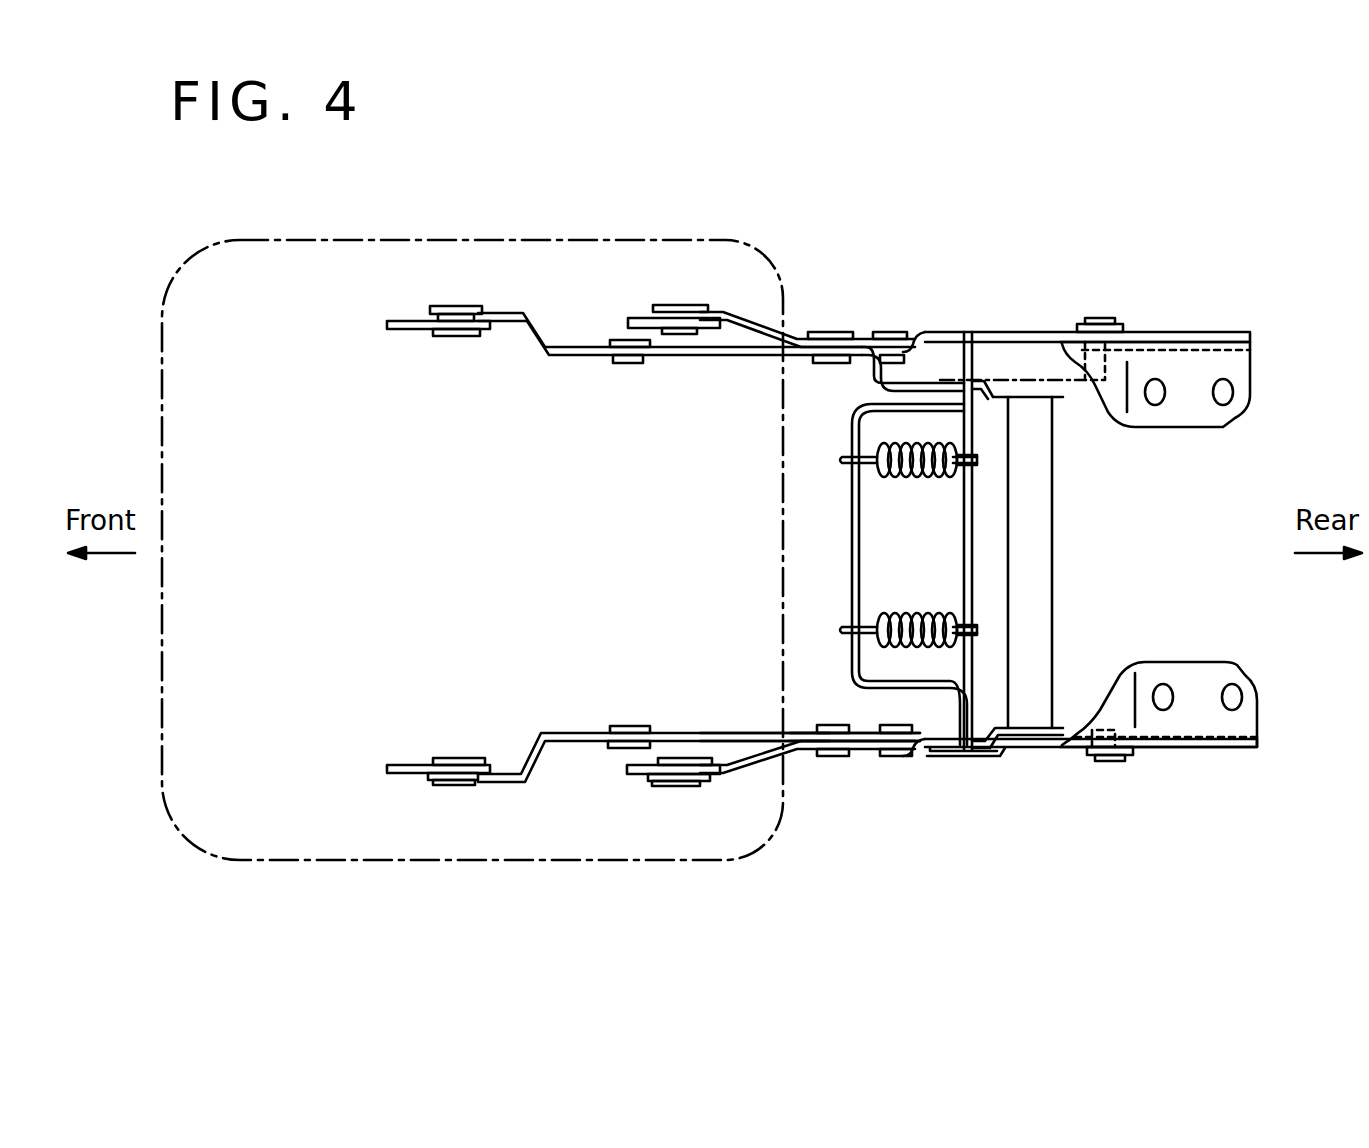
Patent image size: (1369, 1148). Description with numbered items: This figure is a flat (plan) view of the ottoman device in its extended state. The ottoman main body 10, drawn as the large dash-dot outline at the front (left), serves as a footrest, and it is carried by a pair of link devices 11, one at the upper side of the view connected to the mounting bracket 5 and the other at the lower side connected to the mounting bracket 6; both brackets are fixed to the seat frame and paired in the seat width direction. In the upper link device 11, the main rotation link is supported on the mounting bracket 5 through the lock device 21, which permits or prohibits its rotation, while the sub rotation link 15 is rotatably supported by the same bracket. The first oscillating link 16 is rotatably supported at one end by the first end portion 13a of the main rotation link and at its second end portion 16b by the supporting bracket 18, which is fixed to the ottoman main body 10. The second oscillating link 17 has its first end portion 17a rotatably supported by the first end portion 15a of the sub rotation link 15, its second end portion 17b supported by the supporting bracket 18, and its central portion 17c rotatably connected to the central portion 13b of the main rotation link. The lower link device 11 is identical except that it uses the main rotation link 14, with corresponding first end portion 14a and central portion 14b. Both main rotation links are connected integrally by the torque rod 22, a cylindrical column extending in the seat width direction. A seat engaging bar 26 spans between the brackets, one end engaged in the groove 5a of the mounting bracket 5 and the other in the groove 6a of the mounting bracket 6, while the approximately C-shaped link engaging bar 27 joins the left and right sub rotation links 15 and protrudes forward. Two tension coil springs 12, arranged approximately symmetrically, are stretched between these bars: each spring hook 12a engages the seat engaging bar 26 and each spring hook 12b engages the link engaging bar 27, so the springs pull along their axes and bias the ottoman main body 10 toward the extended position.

The mounting bracket 5 is at (1247, 364).
The groove 5a is at (970, 333).
The mounting bracket 6 is at (1253, 718).
The groove 6a is at (970, 757).
The ottoman main body 10 is at (485, 862).
The link device 11 is at (891, 274).
The tension coil spring 12 is at (912, 480).
The spring hook 12a is at (977, 459).
The spring hook 12b is at (851, 460).
The first end portion of main rotation link 13a is at (616, 362).
The central portion of main rotation link 13b is at (806, 356).
The main rotation link 14 is at (711, 734).
The first end portion of main rotation link 14a is at (648, 728).
The central portion of main rotation link 14b is at (806, 733).
The sub rotation link 15 is at (1030, 333).
The first end portion of sub rotation link 15a is at (914, 340).
The first oscillating link 16 is at (556, 347).
The second end portion of first oscillating link 16b is at (442, 318).
The second oscillating link 17 is at (770, 338).
The first end portion of second oscillating link 17a is at (870, 338).
The second end portion of second oscillating link 17b is at (713, 312).
The central portion of second oscillating link 17c is at (802, 338).
The supporting bracket 18 is at (400, 330).
The lock device 21 is at (1088, 397).
The torque rod 22 is at (1052, 591).
The seat engaging bar 26 is at (1010, 546).
The link engaging bar 27 is at (853, 673).